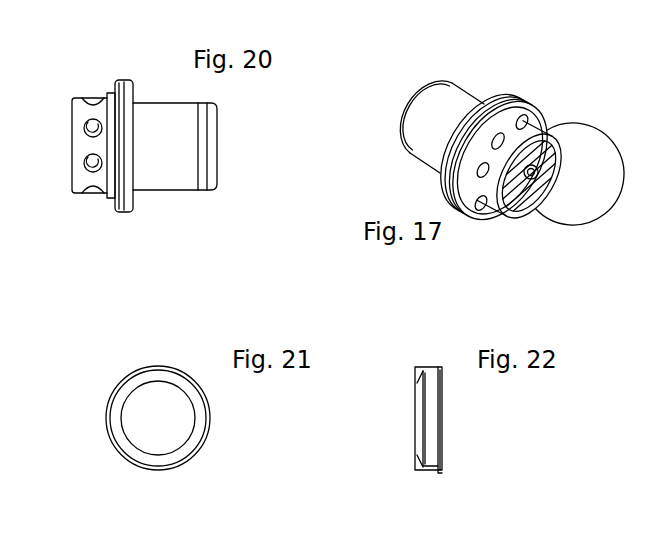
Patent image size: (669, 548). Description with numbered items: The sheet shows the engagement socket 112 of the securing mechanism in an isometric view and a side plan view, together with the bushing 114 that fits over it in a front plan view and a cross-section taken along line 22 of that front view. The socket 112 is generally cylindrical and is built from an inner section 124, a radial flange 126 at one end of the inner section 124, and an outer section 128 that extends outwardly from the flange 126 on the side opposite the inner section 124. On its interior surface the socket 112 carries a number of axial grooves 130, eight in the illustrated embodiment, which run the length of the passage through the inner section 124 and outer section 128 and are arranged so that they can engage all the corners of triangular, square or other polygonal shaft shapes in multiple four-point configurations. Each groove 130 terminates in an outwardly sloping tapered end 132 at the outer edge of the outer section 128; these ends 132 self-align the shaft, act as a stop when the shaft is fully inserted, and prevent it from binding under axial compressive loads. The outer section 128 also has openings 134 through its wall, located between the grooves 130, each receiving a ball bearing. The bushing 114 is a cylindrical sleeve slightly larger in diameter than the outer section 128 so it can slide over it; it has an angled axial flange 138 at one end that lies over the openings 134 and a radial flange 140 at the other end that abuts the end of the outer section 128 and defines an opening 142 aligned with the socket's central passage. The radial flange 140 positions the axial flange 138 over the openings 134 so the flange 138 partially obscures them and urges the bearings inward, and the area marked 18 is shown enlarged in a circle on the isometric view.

In FIG. 17, the detail circle / region 18 is at (593, 174).
In FIG. 21, the section line 22- 22 is at (158, 507).
In FIG. 20, the engagement socket 112 is at (119, 78).
In FIG. 21, the bushing 114 is at (194, 463).
In FIG. 22, the bushing 114 is at (447, 420).
In FIG. 20, the inner section 124 is at (172, 178).
In FIG. 17, the inner section 124 is at (453, 94).
In FIG. 20, the radial flange 126 is at (125, 211).
In FIG. 17, the radial flange 126 is at (515, 98).
In FIG. 20, the outer section 128 is at (78, 182).
In FIG. 17, the outer section 128 is at (492, 214).
In FIG. 17, the axial grooves 130 is at (503, 220).
In FIG. 17, the tapered end 132 is at (553, 162).
In FIG. 20, the openings 134 is at (86, 130).
In FIG. 21, the angled axial flange 138 is at (112, 442).
In FIG. 22, the angled axial flange 138 is at (443, 472).
In FIG. 21, the radial flange 140 is at (125, 405).
In FIG. 22, the radial flange 140 is at (418, 460).
In FIG. 21, the opening 142 is at (170, 403).
In FIG. 22, the opening 142 is at (418, 412).